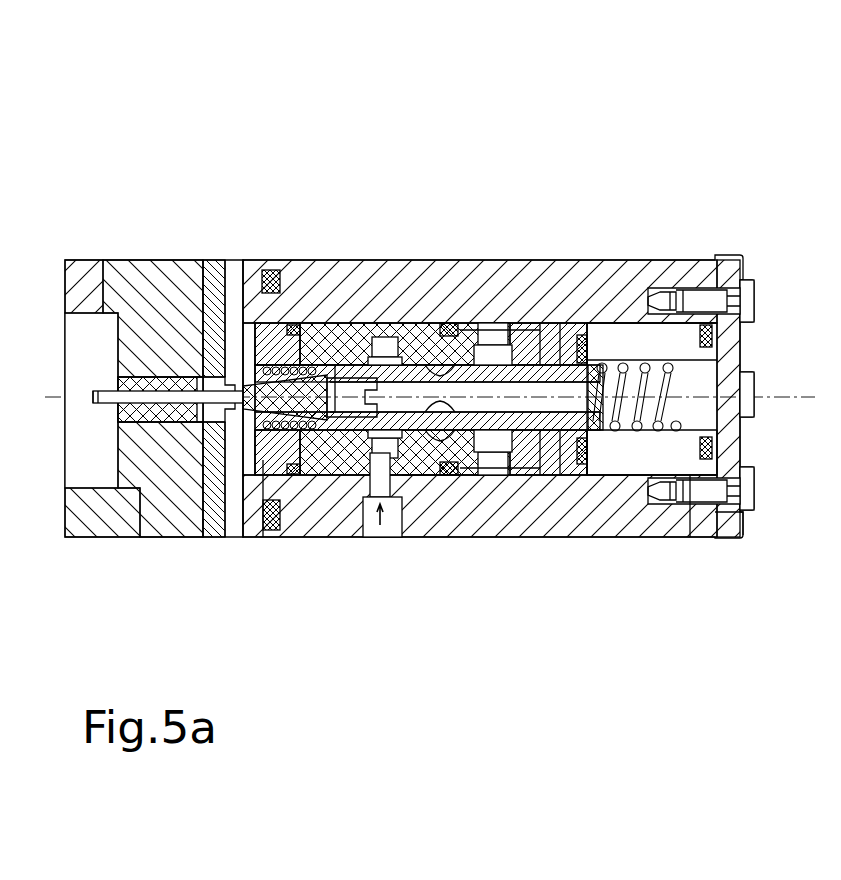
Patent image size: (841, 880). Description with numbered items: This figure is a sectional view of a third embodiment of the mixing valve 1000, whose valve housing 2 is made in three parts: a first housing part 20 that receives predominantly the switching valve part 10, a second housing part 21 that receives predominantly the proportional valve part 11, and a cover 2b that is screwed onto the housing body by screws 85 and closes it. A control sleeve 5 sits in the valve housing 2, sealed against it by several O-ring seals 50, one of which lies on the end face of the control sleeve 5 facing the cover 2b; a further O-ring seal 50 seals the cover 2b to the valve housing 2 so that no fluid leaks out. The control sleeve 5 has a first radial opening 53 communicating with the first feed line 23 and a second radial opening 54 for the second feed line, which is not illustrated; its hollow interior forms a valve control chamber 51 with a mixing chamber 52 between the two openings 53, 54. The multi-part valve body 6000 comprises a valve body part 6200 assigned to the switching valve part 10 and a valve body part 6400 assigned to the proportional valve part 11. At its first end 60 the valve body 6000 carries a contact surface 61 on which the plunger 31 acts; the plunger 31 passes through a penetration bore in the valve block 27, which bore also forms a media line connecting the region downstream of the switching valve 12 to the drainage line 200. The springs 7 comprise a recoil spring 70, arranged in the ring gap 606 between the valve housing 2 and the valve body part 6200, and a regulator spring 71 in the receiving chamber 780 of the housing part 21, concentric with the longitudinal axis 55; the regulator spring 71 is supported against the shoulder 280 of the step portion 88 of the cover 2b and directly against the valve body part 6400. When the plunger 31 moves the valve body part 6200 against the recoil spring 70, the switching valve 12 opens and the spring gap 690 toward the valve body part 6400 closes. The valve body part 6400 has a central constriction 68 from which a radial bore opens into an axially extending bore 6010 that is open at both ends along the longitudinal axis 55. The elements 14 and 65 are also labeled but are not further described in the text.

The switching valve part 10 is at (255, 134).
The proportional valve part 11 is at (747, 134).
The mixing valve 1000 is at (178, 248).
The drainage line 200 is at (214, 260).
The plunger 31 is at (93, 392).
The first housing part 20 is at (143, 260).
The switching valve 12 is at (231, 262).
The valve block 27 is at (138, 537).
The longitudinal axis 55 is at (65, 400).
The contact surface 61 is at (245, 380).
The first end 60 is at (268, 502).
The valve body part 6200 is at (258, 425).
The ring gap 606 is at (273, 272).
The spring gap 690 is at (350, 340).
The first radially arranged opening 53 is at (388, 332).
The valve control chamber 51 is at (435, 323).
The second radially arranged opening 54 is at (483, 323).
The axially extending bore 6010 is at (540, 323).
The housing wall 14 is at (553, 323).
The sealing ring 65 is at (590, 334).
The receiving chamber 780 is at (610, 362).
The second housing part 21 is at (640, 258).
The step portion 88 is at (688, 292).
The O-ring seals 50 is at (707, 325).
The screws 85 is at (750, 282).
The control sleeve 5 is at (347, 420).
The springs 7 is at (318, 478).
The recoil spring 70 is at (249, 399).
The regulator spring 71 is at (618, 432).
The first feed line 23 is at (400, 537).
The constriction 68 is at (420, 480).
The mixing chamber 52 is at (478, 472).
The valve body part 6400 is at (553, 476).
The valve body 6000 is at (521, 476).
The shoulder 280 is at (680, 537).
The valve housing 2 is at (697, 537).
The cover 2b is at (750, 538).